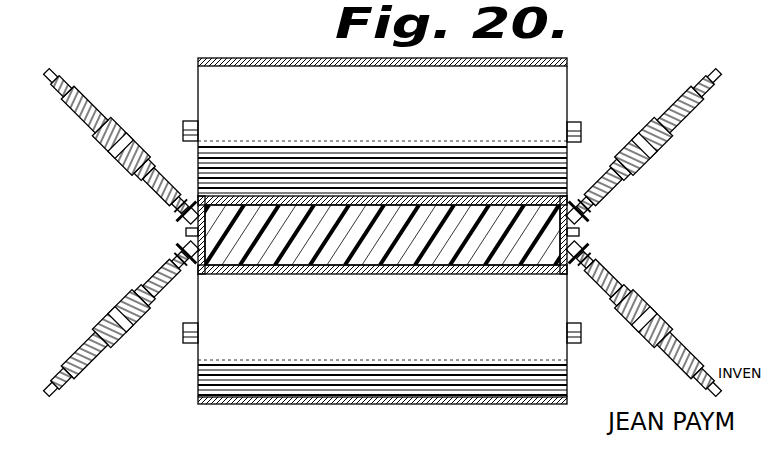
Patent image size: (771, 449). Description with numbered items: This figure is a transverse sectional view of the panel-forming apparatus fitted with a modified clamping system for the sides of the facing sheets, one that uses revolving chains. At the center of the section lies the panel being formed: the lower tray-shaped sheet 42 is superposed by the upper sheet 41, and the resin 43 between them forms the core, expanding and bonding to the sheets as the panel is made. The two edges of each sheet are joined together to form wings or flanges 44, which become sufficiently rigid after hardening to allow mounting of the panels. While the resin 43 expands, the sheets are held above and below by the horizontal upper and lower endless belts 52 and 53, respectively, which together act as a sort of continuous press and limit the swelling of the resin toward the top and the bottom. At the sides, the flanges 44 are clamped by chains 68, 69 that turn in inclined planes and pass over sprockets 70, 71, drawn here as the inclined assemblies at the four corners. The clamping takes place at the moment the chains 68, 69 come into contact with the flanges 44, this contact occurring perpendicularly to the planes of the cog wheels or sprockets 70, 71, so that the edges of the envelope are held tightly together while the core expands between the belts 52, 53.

The upper sheet 41 is at (303, 197).
The lower tray-shaped sheet 42 is at (301, 268).
The resin 43 is at (413, 241).
The flanges 44 is at (190, 231).
The upper endless belt 52 is at (250, 58).
The lower endless belt 53 is at (244, 400).
The chain 68 is at (597, 213).
The chain 69 is at (581, 270).
The sprocket 70 is at (86, 133).
The sprocket 71 is at (80, 347).